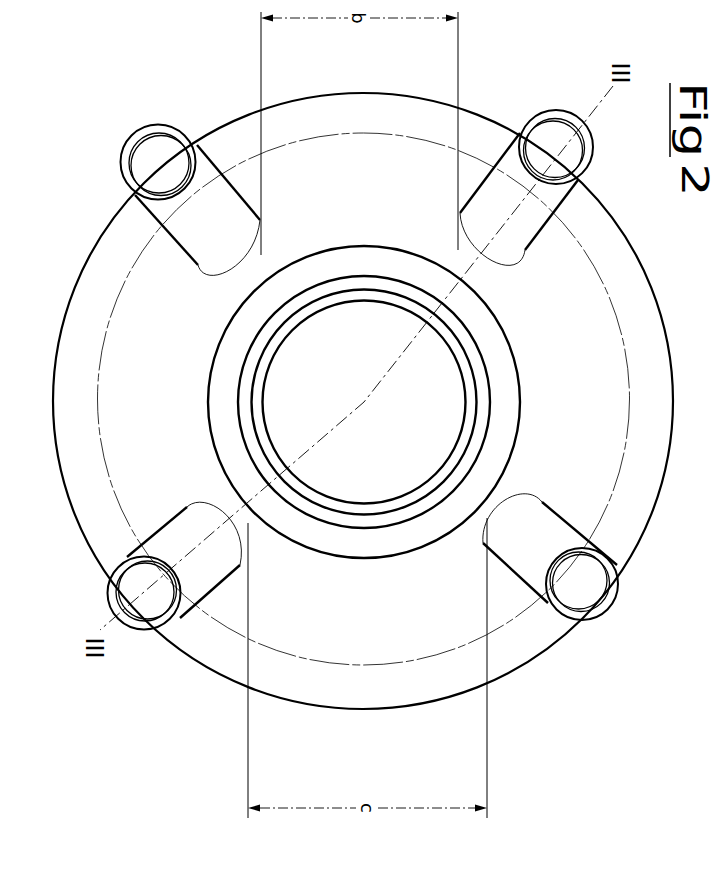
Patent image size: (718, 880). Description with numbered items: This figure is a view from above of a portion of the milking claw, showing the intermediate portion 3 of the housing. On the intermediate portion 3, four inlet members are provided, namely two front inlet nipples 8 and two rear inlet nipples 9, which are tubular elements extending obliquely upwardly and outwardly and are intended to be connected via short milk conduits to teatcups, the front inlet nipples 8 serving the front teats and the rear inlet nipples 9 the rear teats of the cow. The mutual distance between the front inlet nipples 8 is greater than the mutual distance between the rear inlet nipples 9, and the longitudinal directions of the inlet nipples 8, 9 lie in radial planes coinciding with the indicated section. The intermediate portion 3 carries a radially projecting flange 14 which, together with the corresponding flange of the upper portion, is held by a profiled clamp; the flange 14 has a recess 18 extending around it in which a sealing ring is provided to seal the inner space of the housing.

The intermediate portion 3 is at (385, 690).
The inlet nipple 8 is at (195, 578).
The inlet nipple 9 is at (208, 180).
The radially projecting flange 14 is at (377, 537).
The recess 18 is at (415, 507).